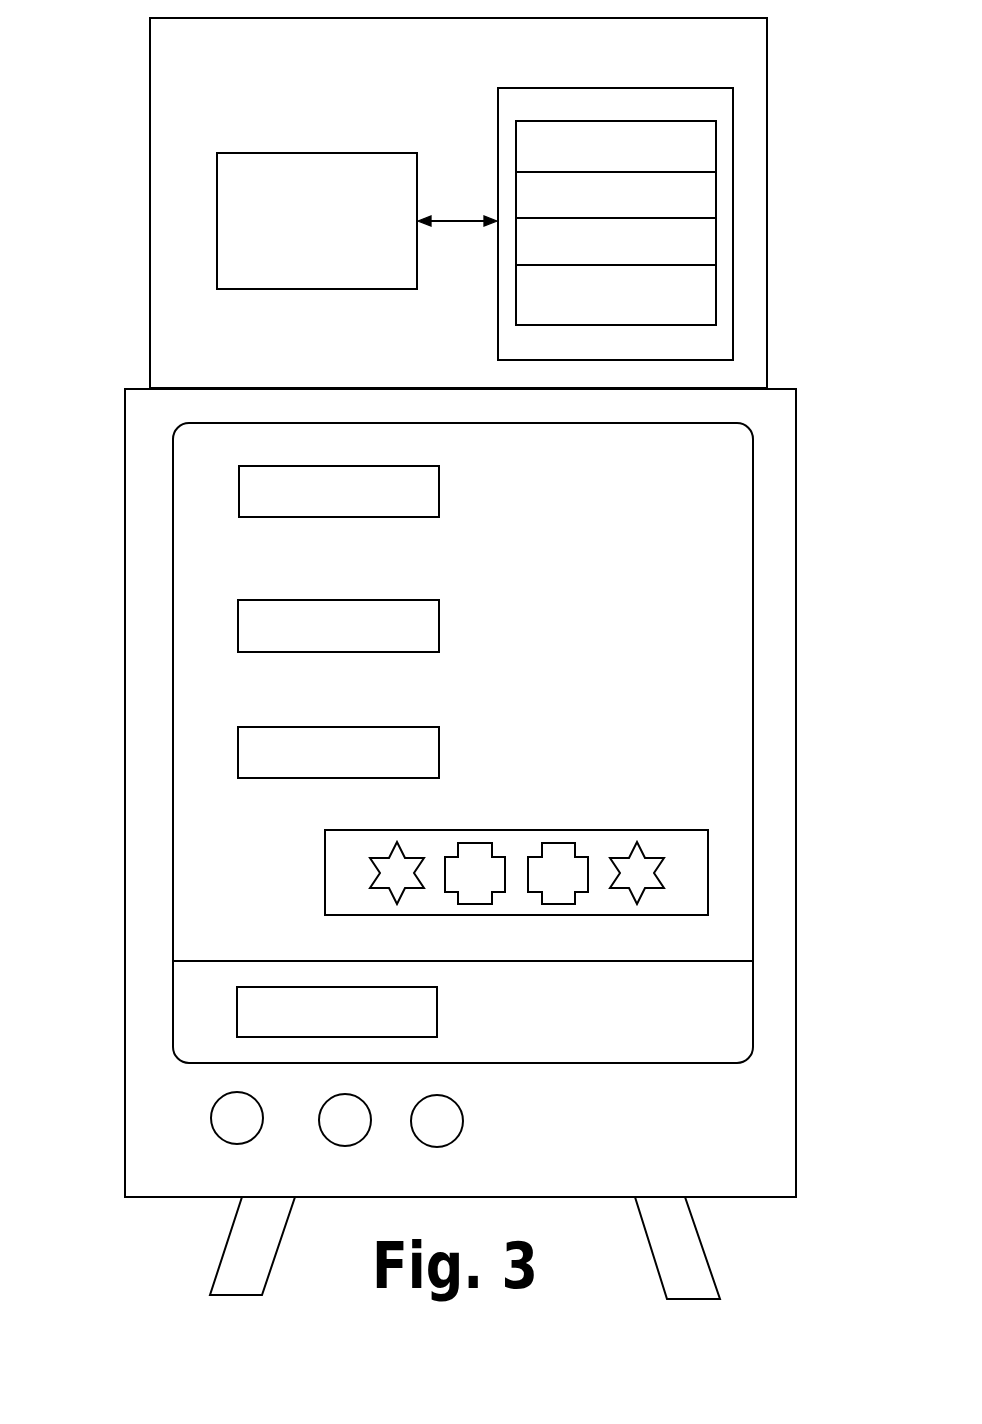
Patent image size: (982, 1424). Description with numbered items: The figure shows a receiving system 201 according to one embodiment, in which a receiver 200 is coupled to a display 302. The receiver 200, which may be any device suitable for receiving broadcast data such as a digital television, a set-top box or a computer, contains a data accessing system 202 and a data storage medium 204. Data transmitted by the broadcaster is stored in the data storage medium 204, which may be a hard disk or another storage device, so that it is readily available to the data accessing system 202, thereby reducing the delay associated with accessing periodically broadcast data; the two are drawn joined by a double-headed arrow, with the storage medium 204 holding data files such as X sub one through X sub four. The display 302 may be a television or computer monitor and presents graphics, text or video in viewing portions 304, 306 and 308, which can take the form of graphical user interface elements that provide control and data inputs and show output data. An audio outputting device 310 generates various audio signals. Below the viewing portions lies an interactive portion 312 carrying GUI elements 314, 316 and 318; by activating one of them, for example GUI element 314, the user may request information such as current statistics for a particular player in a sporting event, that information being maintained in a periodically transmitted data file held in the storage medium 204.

The receiver 200 is at (767, 208).
The system 201 is at (78, 168).
The data accessing system 202 is at (299, 250).
The data storage medium 204 is at (498, 90).
The display 302 is at (173, 514).
The viewing portion 304 is at (440, 487).
The viewing portion 306 is at (440, 622).
The viewing portion 308 is at (300, 726).
The audio outputting device 310 is at (420, 1010).
The interactive portion 312 is at (395, 868).
The GUI element 314 is at (482, 870).
The GUI element 316 is at (563, 864).
The GUI element 318 is at (646, 868).